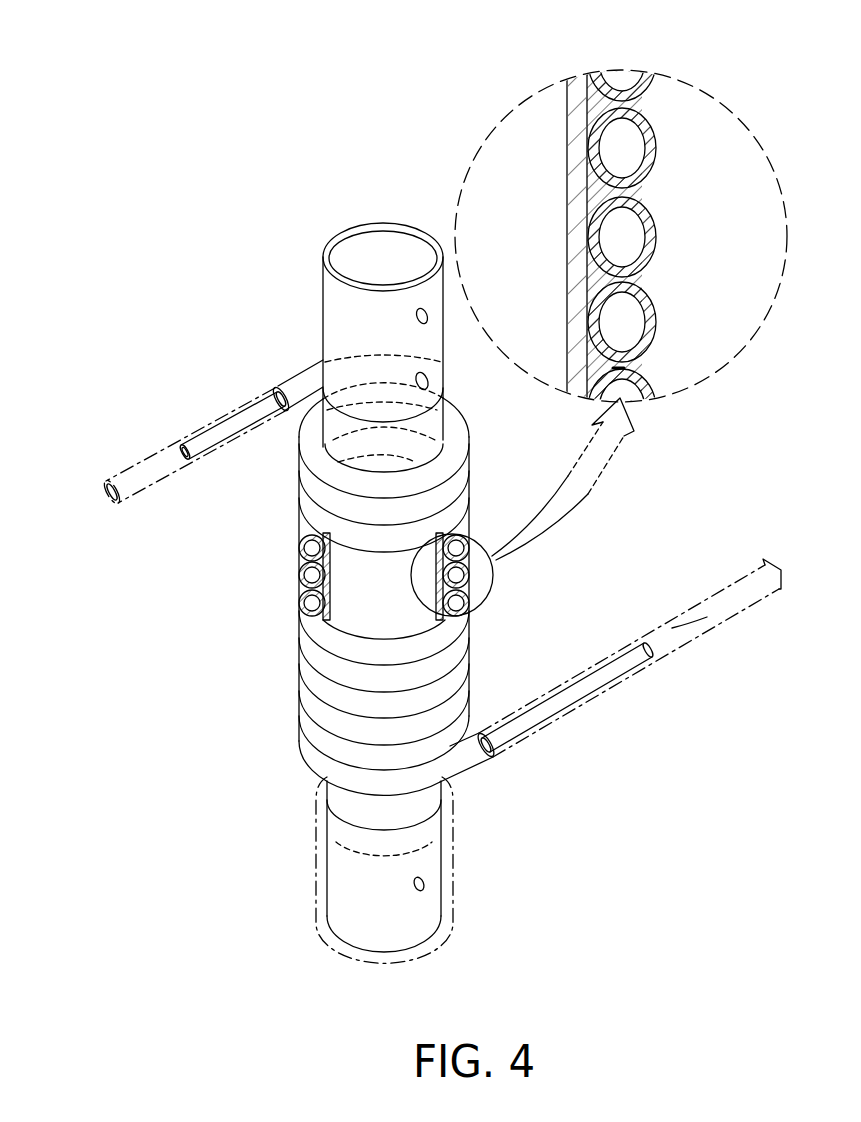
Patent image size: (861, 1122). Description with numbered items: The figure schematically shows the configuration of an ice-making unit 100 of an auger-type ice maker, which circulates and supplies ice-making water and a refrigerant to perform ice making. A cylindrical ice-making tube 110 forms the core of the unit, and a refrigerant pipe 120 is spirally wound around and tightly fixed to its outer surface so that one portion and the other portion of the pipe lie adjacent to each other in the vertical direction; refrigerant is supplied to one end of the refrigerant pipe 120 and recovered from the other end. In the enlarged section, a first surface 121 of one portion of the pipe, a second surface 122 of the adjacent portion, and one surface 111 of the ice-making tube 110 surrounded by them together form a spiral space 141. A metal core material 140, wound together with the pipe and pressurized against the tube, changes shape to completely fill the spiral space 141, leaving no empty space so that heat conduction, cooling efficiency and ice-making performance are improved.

The ice-making unit 100 is at (196, 208).
The ice-making tube 110 is at (333, 318).
The one surface of the ice-making tube 111 is at (587, 192).
The refrigerant pipe 120 is at (153, 473).
The first surface 121 is at (640, 178).
The second surface 122 is at (623, 215).
The metal core material 140 is at (587, 277).
The spiral space 141 is at (631, 366).